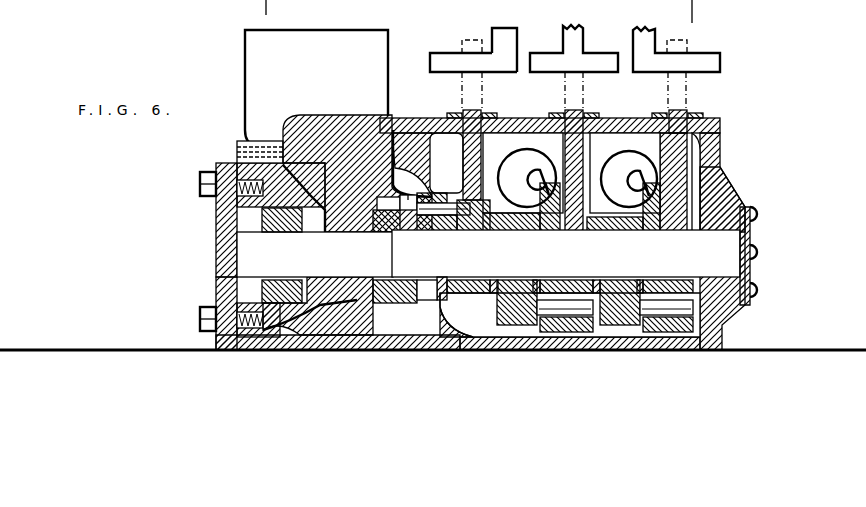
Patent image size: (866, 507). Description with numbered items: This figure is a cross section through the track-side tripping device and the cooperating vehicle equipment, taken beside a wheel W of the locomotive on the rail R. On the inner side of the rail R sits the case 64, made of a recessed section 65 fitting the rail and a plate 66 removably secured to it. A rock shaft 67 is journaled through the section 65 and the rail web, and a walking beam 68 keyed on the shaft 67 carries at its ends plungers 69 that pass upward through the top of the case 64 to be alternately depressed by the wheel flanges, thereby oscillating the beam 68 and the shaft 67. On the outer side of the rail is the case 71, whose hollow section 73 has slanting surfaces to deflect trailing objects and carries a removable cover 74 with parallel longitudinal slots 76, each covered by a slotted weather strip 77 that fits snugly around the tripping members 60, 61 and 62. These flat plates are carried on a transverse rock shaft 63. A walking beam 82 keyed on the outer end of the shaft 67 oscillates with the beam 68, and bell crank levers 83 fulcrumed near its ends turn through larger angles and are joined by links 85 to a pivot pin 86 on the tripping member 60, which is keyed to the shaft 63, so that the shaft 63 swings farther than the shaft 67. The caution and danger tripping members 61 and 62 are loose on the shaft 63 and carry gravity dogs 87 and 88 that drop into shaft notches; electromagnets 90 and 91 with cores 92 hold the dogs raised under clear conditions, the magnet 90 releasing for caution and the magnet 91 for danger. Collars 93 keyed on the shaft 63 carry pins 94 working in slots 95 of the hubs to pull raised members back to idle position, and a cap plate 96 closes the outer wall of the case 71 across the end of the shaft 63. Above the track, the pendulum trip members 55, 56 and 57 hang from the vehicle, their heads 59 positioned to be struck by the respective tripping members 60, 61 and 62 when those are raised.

The wheel W is at (262, 45).
The rail R is at (330, 115).
The trip member 55 is at (493, 31).
The trip member 56 is at (642, 39).
The trip member 57 is at (575, 34).
The head 59 is at (498, 68).
The tripping member 60 is at (466, 110).
The caution tripping member 61 is at (677, 112).
The danger tripping member 62 is at (573, 112).
The rock shaft 63 is at (718, 240).
The case 64 is at (192, 220).
The recessed section 65 is at (293, 337).
The plate 66 is at (222, 283).
The rock shaft 67 is at (270, 257).
The walking beam 68 is at (278, 233).
The plunger 69 is at (236, 152).
The case 71 is at (735, 161).
The hollow section 73 is at (740, 190).
The cover 74 is at (720, 118).
The slot 76 is at (616, 168).
The weather strip 77 is at (700, 118).
The walking beam 82 is at (380, 233).
The bell crank lever 83 is at (408, 202).
The link 85 is at (443, 215).
The pivot pin 86 is at (430, 222).
The dog 87 is at (654, 235).
The dog 88 is at (543, 233).
The electromagnet 90 is at (630, 157).
The electromagnet 91 is at (512, 172).
The core 92 is at (536, 200).
The collar 93 is at (503, 323).
The pin 94 is at (553, 309).
The slot 95 is at (578, 328).
The cap plate 96 is at (752, 267).